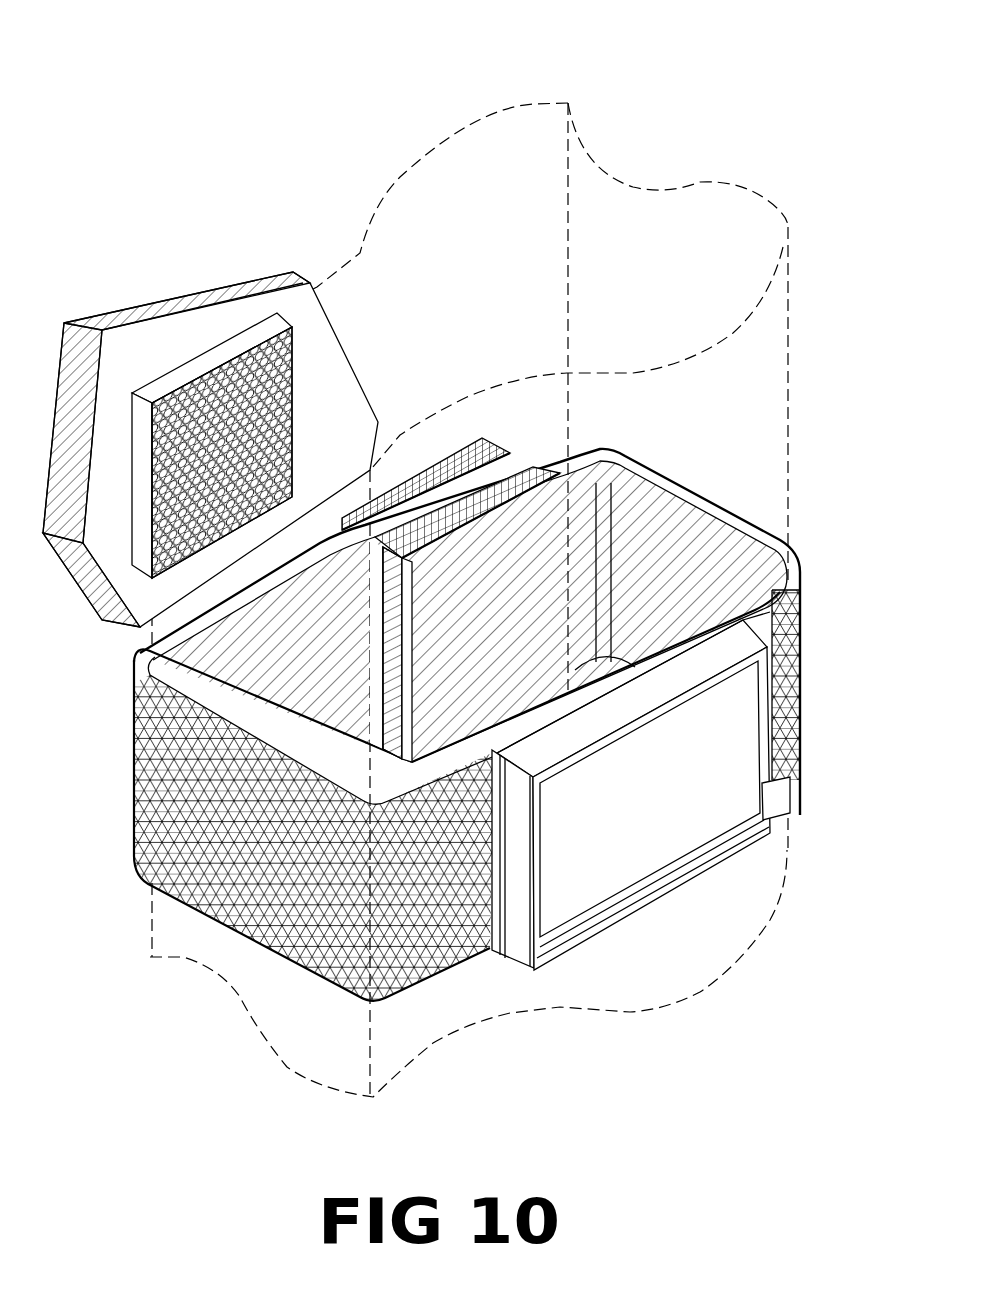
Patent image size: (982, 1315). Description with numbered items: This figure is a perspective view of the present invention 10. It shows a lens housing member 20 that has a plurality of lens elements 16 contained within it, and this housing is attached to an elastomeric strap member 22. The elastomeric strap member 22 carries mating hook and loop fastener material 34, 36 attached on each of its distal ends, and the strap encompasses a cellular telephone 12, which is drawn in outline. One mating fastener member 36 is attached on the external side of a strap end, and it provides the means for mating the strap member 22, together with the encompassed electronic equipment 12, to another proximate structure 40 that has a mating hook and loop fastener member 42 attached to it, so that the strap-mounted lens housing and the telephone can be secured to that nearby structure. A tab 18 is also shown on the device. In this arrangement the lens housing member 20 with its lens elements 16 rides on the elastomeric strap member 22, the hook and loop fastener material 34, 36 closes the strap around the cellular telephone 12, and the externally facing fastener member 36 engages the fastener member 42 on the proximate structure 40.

The present invention 10 is at (504, 674).
The cellular telephone 12 is at (736, 207).
The lens elements 16 is at (585, 880).
The tab 18 is at (790, 812).
The lens housing member 20 is at (727, 653).
The elastomeric strap member 22 is at (172, 878).
The hook and loop fastener material 34 is at (533, 467).
The mating fastener member 36 is at (490, 377).
The proximate structure 40 is at (186, 293).
The mating hook and loop fastener member 42 is at (270, 360).